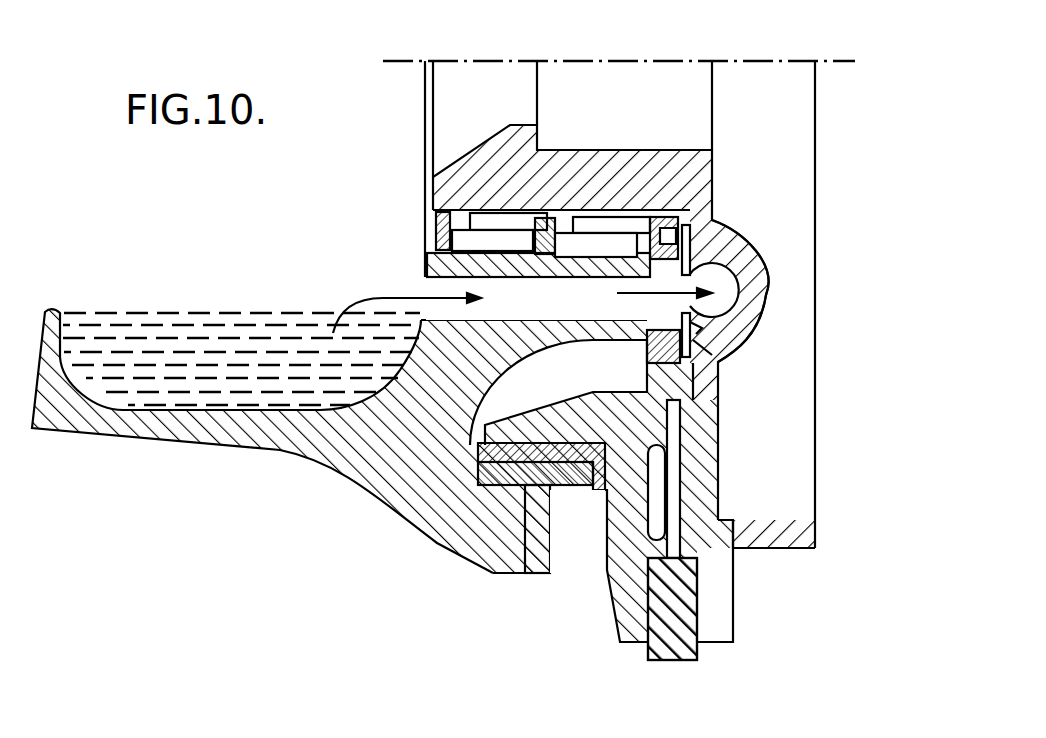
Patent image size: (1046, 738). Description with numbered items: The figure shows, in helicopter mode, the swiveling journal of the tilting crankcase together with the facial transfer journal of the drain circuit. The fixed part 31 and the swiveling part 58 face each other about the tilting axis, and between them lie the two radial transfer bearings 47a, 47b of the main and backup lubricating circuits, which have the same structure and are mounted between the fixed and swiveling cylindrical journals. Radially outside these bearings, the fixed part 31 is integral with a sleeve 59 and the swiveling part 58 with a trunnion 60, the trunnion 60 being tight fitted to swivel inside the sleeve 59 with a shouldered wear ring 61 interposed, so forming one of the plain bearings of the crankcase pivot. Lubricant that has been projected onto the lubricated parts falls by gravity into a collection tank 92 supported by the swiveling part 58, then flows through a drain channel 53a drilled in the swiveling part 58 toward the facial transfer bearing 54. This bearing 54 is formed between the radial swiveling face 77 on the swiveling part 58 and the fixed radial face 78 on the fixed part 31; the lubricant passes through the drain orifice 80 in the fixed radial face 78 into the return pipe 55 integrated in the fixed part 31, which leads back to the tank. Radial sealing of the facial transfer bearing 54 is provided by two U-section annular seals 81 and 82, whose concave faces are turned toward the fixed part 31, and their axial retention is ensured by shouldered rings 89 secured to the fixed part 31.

The fixed part 31 is at (560, 182).
The transfer bearing of the main lubricating circuit 47a is at (492, 211).
The transfer bearing of the backup lubricating circuit 47b is at (605, 210).
The shouldered ring 89 is at (705, 198).
The annular seal 81 is at (677, 237).
The radial swiveling face 77 is at (684, 287).
The return pipe 55 is at (728, 288).
The drain orifice 80 is at (684, 305).
The fixed radial face 78 is at (692, 325).
The facial transfer bearing 54 is at (703, 342).
The annular seal 82 is at (690, 355).
The drain channel 53a is at (440, 293).
The collection tank 92 is at (167, 422).
The swiveling part 58 is at (412, 448).
The sleeve 59 is at (548, 421).
The trunnion 60 is at (538, 543).
The shouldered wear ring 61 is at (598, 492).